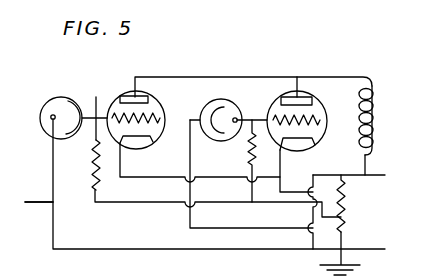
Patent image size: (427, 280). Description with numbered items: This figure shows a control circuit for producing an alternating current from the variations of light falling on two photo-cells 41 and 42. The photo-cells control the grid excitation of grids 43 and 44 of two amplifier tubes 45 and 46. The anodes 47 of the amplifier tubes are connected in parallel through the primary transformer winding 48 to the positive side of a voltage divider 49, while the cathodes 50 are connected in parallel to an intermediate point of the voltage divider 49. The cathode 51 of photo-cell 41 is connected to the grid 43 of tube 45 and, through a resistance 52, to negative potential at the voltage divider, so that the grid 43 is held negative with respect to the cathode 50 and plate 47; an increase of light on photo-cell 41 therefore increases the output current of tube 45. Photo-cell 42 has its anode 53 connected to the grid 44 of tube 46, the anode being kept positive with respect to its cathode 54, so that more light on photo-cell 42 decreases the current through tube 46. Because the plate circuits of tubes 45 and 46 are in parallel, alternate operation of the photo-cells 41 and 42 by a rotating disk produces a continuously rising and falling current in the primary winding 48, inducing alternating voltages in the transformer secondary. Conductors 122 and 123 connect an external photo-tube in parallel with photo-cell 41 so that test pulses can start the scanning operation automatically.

The photo-cell 41 is at (53, 97).
The cathode of photo-cell 41 51 is at (70, 100).
The conductor 123 is at (97, 97).
The resistance 52 is at (90, 162).
The conductor 122 is at (42, 203).
The amplifier tube 45 is at (123, 93).
The anode 47 is at (140, 96).
The grid 43 is at (153, 123).
The photo-cell 42 is at (207, 108).
The cathode of photo-cell 42 54 is at (215, 108).
The anode of photo-cell 42 53 is at (238, 119).
The amplifier tube 46 is at (318, 105).
The grid 44 is at (312, 127).
The cathode 50 is at (292, 143).
The primary transformer winding 48 is at (375, 113).
The voltage divider 49 is at (343, 215).